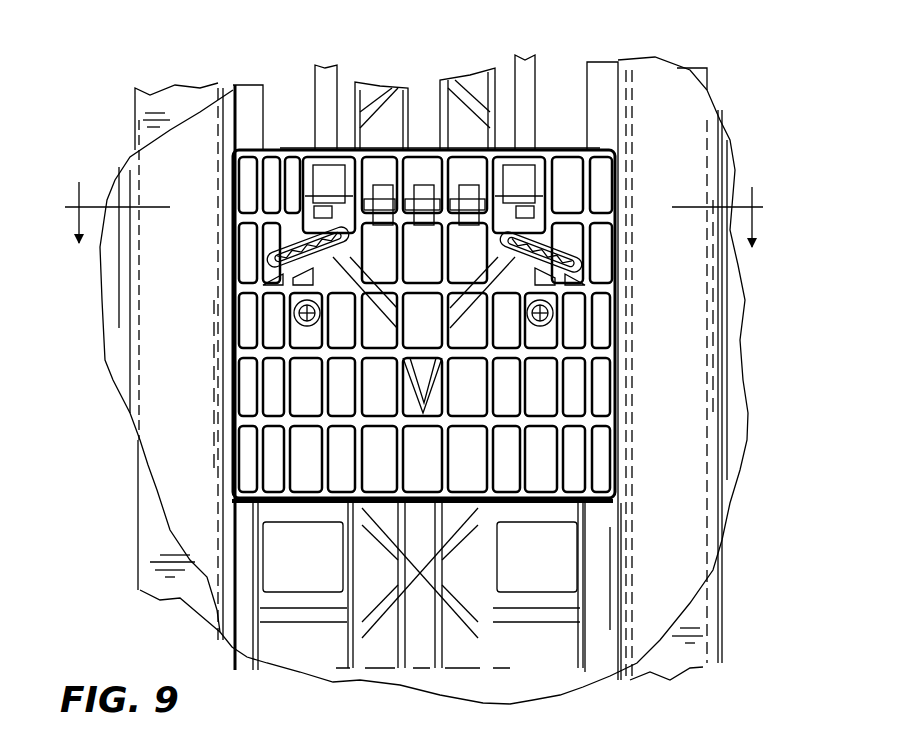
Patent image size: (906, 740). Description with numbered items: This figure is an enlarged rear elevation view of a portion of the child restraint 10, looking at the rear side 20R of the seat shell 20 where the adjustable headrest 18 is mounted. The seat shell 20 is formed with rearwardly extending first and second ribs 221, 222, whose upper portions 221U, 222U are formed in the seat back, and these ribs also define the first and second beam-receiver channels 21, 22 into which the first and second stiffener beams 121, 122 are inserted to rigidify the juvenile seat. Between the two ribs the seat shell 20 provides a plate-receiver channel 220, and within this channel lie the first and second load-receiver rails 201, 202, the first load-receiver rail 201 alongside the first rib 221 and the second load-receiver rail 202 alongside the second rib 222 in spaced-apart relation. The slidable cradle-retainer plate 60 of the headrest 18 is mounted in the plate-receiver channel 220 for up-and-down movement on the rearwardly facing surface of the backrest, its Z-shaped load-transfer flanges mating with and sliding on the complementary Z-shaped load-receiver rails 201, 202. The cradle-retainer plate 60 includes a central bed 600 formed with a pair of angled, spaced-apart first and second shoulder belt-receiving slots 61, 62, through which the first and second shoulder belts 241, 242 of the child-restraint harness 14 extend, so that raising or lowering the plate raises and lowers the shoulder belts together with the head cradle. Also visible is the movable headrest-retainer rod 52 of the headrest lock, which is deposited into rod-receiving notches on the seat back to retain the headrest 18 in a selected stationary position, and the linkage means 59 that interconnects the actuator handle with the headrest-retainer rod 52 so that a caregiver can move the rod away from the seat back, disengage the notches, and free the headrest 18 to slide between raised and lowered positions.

The child restraint 10 is at (422, 194).
The child-restraint harness 14 is at (310, 270).
The headrest 18 is at (567, 145).
The seat shell 20 is at (553, 672).
The rear side 20R is at (357, 662).
The first beam-receiver channel 21 is at (665, 548).
The second beam-receiver channel 22 is at (182, 470).
The headrest-retainer rod 52 is at (412, 193).
The linkage means 59 is at (518, 57).
The slidable cradle-retainer plate 60 is at (223, 418).
The central bed 600 is at (528, 440).
The first shoulder belt-receiving slot 61 is at (552, 250).
The second shoulder belt-receiving slot 62 is at (283, 248).
The first stiffener beam 121 is at (714, 66).
The second stiffener beam 122 is at (150, 85).
The first load-receiver rail 201 is at (603, 76).
The second load-receiver rail 202 is at (240, 82).
The plate-receiver channel 220 is at (294, 86).
The first rib 221 is at (688, 318).
The upper portion of first rib 221U is at (697, 365).
The second rib 222 is at (165, 289).
The upper portion of second rib 222U is at (153, 372).
The first shoulder belt 241 is at (583, 252).
The second shoulder belt 242 is at (265, 258).